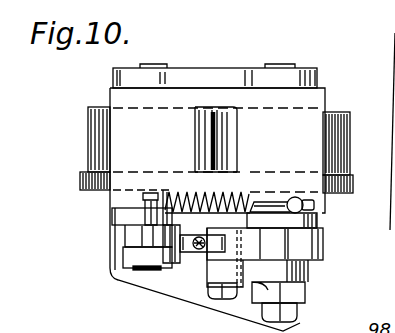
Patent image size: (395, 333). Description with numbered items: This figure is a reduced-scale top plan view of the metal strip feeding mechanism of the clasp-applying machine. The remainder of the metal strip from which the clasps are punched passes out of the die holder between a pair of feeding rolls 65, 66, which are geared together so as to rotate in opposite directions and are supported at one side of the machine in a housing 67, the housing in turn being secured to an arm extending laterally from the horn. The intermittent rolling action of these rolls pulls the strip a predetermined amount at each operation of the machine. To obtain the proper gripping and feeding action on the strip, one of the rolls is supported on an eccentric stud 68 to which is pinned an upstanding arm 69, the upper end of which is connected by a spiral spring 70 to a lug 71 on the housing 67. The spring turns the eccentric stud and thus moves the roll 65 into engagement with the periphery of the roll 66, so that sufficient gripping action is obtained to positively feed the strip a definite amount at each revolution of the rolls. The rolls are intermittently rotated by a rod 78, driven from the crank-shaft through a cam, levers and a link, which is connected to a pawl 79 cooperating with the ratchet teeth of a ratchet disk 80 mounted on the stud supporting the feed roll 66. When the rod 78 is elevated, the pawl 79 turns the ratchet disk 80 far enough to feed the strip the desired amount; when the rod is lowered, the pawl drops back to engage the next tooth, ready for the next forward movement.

The feeding roll 65 is at (88, 127).
The feeding roll 66 is at (348, 112).
The housing 67 is at (232, 74).
The eccentric stud 68 is at (152, 272).
The upstanding arm 69 is at (128, 262).
The spiral spring 70 is at (243, 195).
The lug 71 is at (302, 197).
The rod 78 is at (195, 237).
The pawl 79 is at (238, 246).
The ratchet disk 80 is at (287, 251).